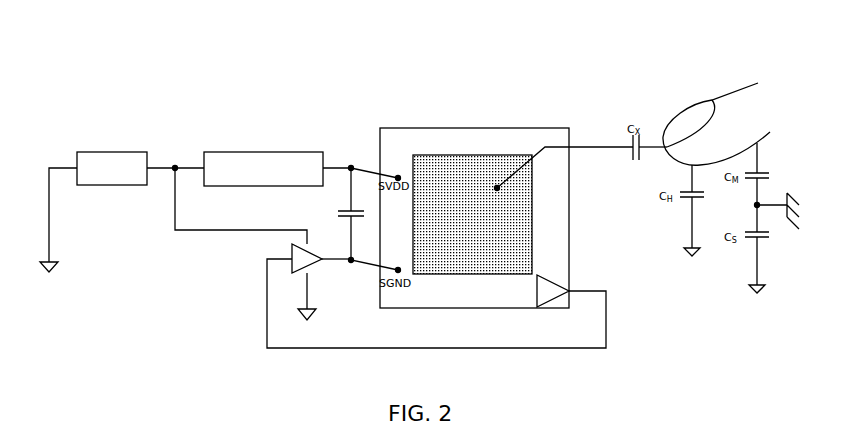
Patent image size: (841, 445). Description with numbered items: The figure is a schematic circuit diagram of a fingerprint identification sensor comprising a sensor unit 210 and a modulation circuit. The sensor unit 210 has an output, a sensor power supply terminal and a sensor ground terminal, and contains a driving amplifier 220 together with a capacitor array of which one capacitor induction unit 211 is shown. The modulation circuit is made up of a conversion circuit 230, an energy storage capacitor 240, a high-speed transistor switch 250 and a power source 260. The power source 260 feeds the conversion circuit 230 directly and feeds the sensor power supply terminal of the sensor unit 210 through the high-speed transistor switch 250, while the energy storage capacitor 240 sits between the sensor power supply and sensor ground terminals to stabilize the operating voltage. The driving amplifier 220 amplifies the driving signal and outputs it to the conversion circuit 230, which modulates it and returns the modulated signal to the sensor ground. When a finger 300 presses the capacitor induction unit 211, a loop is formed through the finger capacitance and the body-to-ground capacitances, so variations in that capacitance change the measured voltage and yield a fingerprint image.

The sensor unit 210 is at (521, 114).
The capacitor induction unit 211 is at (442, 167).
The driving amplifier 220 is at (543, 303).
The conversion circuit 230 is at (298, 262).
The energy storage capacitor 240 is at (338, 212).
The high-speed transistor switch 250 is at (280, 152).
The power source 260 is at (110, 186).
The finger 300 is at (753, 113).